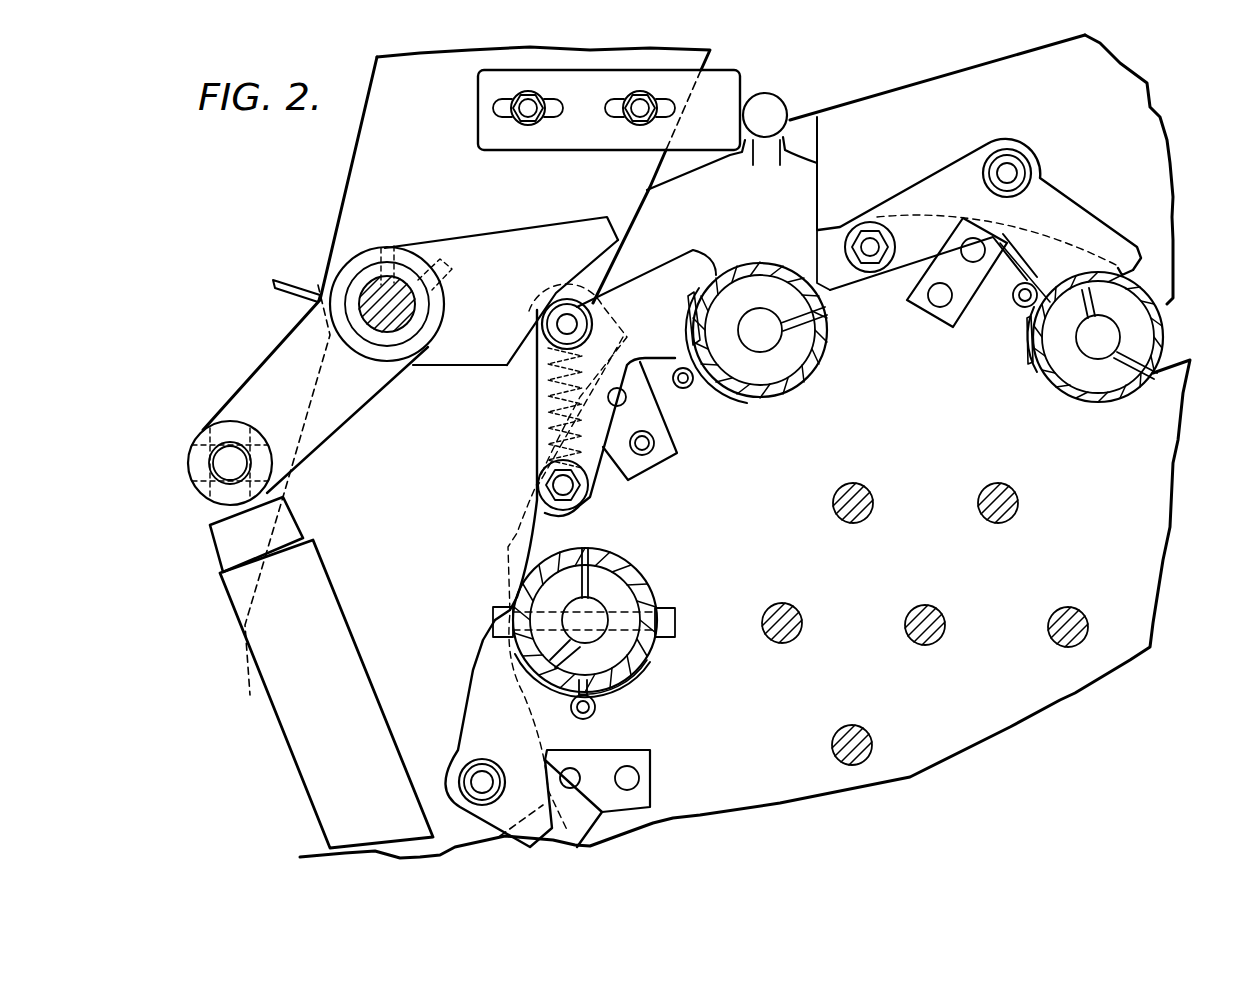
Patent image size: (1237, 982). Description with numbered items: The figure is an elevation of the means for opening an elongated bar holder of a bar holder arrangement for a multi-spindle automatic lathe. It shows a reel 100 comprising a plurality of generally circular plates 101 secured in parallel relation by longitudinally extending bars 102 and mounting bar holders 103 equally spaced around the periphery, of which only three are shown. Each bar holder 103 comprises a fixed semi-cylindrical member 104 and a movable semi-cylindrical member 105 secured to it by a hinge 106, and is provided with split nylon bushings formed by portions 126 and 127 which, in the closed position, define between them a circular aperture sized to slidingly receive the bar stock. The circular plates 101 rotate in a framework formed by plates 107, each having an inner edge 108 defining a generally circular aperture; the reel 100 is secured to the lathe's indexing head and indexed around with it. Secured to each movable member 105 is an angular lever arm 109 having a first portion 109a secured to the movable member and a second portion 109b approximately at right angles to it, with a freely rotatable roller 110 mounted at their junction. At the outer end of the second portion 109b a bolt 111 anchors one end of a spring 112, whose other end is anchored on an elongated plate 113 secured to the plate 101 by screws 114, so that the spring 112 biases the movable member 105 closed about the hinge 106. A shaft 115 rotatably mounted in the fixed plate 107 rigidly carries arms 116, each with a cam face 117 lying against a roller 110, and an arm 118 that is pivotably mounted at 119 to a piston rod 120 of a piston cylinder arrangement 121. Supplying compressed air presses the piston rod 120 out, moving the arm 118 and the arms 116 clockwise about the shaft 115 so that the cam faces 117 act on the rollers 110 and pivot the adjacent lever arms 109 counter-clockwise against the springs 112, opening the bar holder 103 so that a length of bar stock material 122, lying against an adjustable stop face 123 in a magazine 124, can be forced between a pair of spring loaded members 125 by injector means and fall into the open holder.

The reel 100 is at (804, 491).
The circular plates 101 is at (975, 752).
The longitudinally extending bars 102 is at (988, 505).
The bar holders 103 is at (800, 372).
The fixed semi-cylindrical member 104 is at (772, 396).
The movable semi-cylindrical member 105 is at (765, 268).
The hinge 106 is at (678, 368).
The plates 107 is at (432, 602).
The inner edge 108 is at (858, 205).
The lever arm 109 is at (554, 383).
The first portion 109a is at (700, 264).
The second portion 109b is at (540, 427).
The roller 110 is at (472, 770).
The bolt 111 is at (570, 490).
The spring 112 is at (533, 352).
The elongated plate 113 is at (640, 465).
The screws 114 is at (644, 430).
The shaft 115 is at (385, 290).
The arms 116 is at (456, 345).
The cam face 117 is at (545, 322).
The arm 118 is at (348, 410).
The pivot 119 is at (245, 458).
The piston rod 120 is at (285, 522).
The piston cylinder arrangement 121 is at (325, 622).
The bar stock material 122 is at (770, 110).
The adjustable stop face 123 is at (754, 160).
The magazine 124 is at (937, 77).
The spring loaded members 125 is at (722, 166).
The nylon bushing portion 126 is at (757, 298).
The nylon bushing portion 127 is at (754, 367).